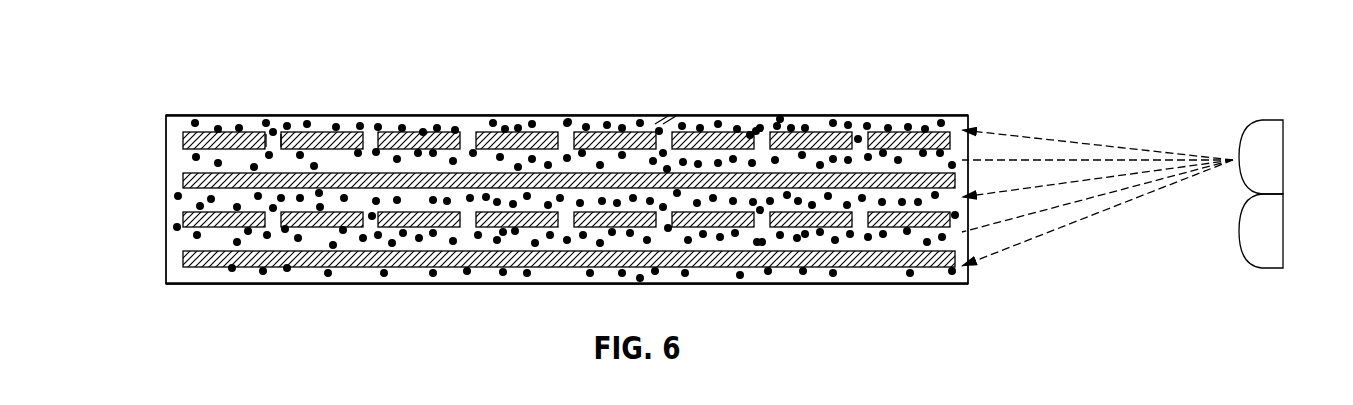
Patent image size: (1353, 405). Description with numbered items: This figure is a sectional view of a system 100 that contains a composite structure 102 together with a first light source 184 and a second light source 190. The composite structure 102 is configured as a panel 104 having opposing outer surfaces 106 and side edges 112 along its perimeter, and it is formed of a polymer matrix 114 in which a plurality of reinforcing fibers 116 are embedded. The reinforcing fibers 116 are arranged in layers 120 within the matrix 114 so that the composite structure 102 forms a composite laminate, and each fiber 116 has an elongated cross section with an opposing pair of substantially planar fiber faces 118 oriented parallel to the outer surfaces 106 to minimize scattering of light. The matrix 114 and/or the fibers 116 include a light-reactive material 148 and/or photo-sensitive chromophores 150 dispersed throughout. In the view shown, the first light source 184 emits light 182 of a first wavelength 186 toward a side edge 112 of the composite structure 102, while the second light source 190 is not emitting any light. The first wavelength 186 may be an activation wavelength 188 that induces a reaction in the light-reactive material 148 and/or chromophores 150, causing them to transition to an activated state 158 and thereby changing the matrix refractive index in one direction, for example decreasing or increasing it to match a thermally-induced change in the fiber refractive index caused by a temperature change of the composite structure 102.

The system 100 is at (1136, 58).
The composite structure 102 is at (164, 279).
The panel 104 is at (165, 121).
The outer surfaces 106 is at (242, 115).
The side edge 112 is at (166, 205).
The polymer matrix 114 is at (660, 123).
The reinforcing fibers 116 is at (397, 137).
The planar fiber faces 118 is at (421, 132).
The layers 120 is at (183, 172).
The light-reactive material 148 is at (780, 118).
The photo-sensitive chromophores 150 is at (533, 122).
The activated state 158 is at (568, 122).
The light 182 is at (1040, 137).
The first light source 184 is at (1283, 156).
The first wavelength 186 is at (1132, 147).
The activation wavelength 188 is at (1107, 212).
The second light source 190 is at (1283, 226).